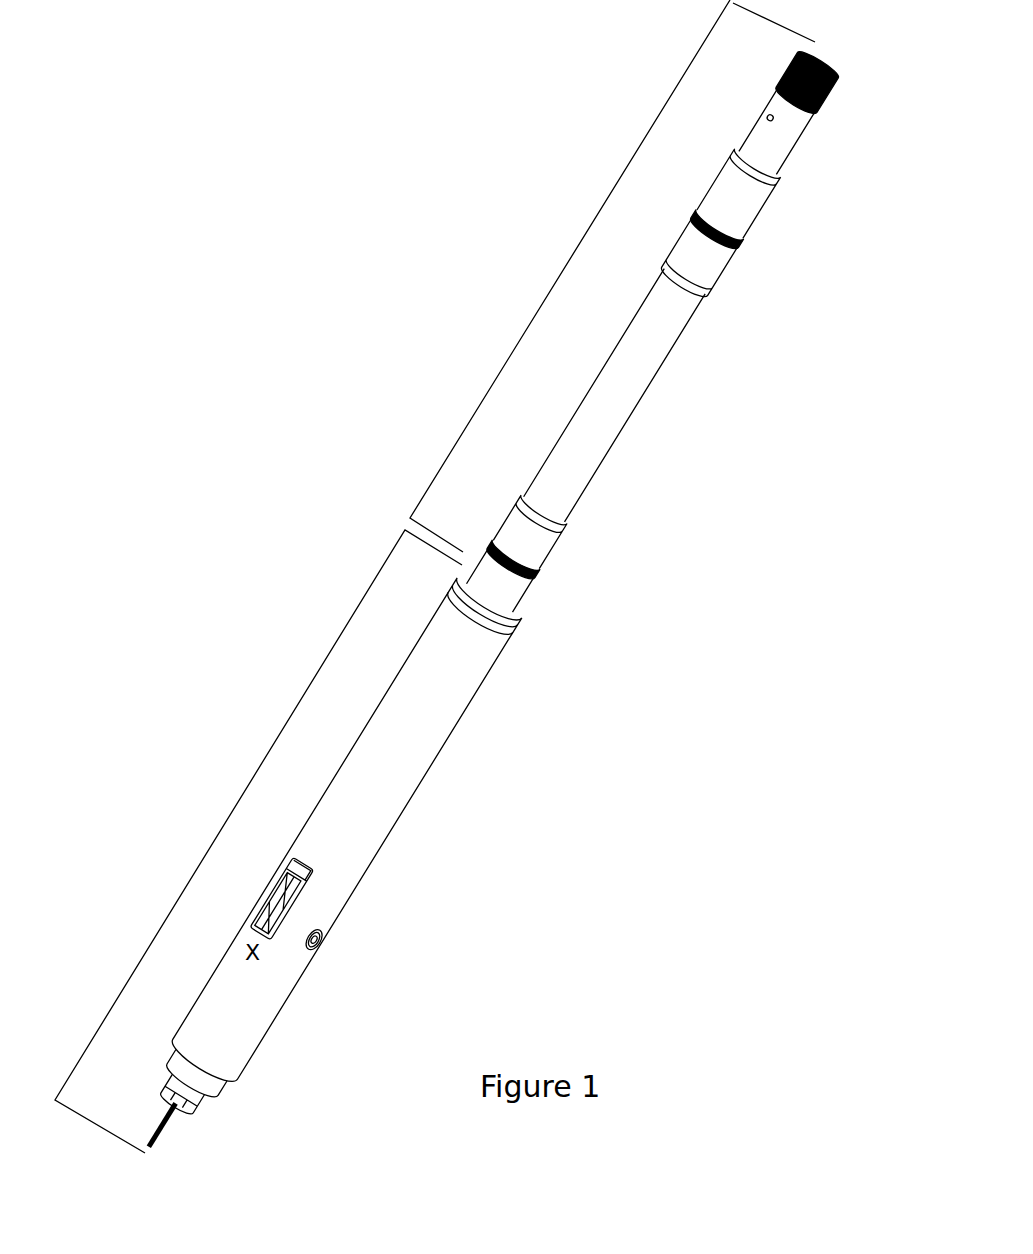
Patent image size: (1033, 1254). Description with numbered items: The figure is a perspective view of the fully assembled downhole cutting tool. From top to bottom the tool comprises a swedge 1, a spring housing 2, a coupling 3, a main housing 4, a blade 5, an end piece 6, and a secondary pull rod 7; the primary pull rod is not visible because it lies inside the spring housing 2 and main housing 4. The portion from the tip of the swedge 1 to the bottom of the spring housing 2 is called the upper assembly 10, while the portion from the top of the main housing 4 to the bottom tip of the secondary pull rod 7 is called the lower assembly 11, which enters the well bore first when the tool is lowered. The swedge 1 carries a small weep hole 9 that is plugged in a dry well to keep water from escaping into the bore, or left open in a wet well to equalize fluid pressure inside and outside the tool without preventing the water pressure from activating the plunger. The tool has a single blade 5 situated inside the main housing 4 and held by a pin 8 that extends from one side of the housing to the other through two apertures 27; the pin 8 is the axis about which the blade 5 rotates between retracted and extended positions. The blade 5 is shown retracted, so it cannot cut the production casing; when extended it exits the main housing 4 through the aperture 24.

The swedge 1 is at (792, 128).
The weep hole 9 is at (767, 115).
The upper assembly 10 is at (569, 256).
The lower assembly 11 is at (229, 814).
The spring housing 2 is at (620, 416).
The coupling 3 is at (513, 594).
The main housing 4 is at (413, 735).
The blade 5 is at (299, 858).
The aperture 24 is at (312, 871).
The apertures 27 is at (254, 912).
The pin 8 is at (321, 948).
The end piece 6 is at (208, 1096).
The secondary pull rod 7 is at (172, 1122).